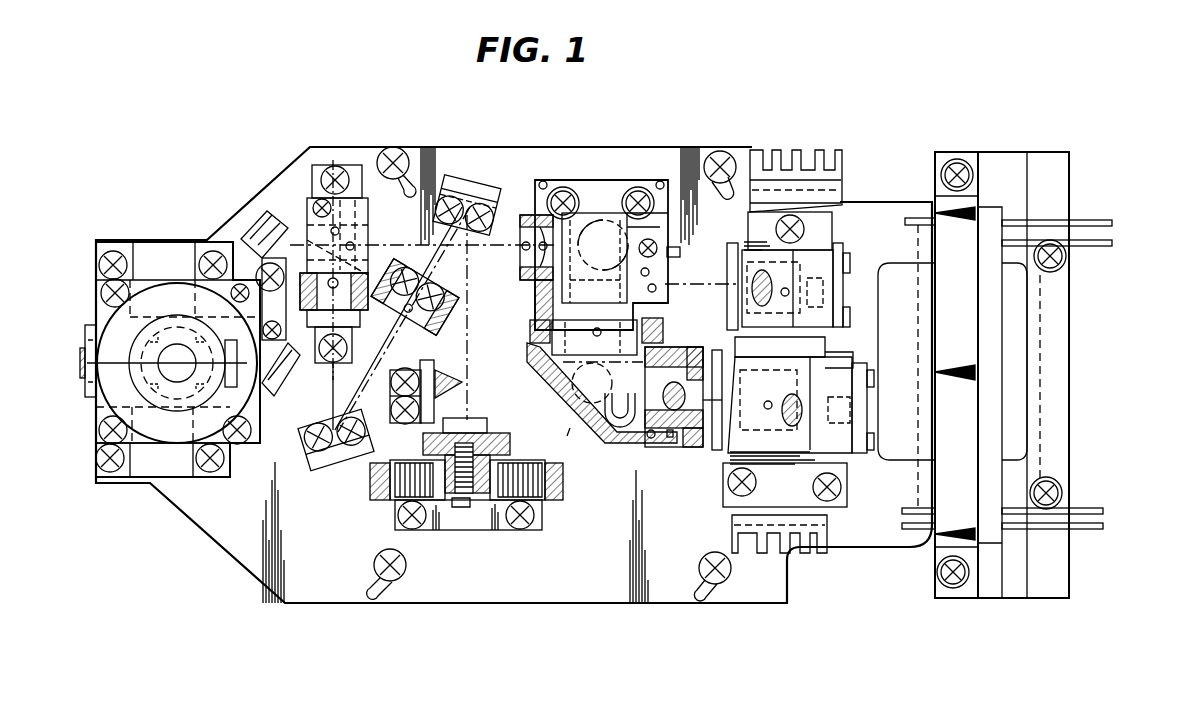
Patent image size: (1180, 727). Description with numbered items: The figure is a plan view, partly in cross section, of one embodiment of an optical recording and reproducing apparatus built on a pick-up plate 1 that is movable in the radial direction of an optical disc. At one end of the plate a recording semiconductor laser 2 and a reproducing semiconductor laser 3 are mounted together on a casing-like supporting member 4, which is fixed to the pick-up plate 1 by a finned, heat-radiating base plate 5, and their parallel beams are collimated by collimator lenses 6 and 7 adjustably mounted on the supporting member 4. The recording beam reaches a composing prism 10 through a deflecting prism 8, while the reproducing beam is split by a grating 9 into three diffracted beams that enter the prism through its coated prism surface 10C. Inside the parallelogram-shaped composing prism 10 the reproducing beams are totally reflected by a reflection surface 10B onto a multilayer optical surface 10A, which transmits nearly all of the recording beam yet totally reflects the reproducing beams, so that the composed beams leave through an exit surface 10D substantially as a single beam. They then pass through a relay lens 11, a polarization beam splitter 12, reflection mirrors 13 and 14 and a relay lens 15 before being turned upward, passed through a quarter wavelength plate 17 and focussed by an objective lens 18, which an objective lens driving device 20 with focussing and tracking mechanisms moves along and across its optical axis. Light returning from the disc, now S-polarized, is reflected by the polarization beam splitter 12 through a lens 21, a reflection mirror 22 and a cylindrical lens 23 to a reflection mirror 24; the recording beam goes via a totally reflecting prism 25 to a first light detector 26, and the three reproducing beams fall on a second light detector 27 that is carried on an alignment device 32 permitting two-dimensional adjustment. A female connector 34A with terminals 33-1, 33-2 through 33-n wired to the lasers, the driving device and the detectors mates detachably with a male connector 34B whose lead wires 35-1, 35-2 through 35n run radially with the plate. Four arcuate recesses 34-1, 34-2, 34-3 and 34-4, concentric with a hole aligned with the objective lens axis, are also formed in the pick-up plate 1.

The pick-up plate 1 is at (612, 597).
The recording semiconductor laser 2 is at (818, 297).
The reproducing semiconductor laser 3 is at (840, 410).
The supporting member 4 is at (835, 438).
The base plate 5 is at (818, 518).
The collimator lens 6 is at (788, 274).
The collimator lens 7 is at (750, 423).
The deflecting prism 8 is at (682, 150).
The grating 9 is at (638, 446).
The composing prism 10 is at (582, 297).
The optical surface 10A is at (595, 303).
The reflection surface 10B is at (587, 362).
The prism surface 10C is at (670, 345).
The exit surface 10D is at (565, 187).
The relay lens 11 is at (523, 213).
The polarization beam splitter 12 is at (307, 230).
The reflection mirror 13 is at (243, 255).
The reflection mirror 14 is at (268, 393).
The relay lens 15 is at (228, 441).
The quarter wavelength plate 17 is at (88, 356).
The objective lens 18 is at (152, 367).
The objective lens driving device 20 is at (96, 325).
The lens 21 is at (310, 333).
The reflection mirror 22 is at (330, 450).
The cylindrical lens 23 is at (425, 258).
The reflection mirror 24 is at (453, 187).
The totally reflecting prism 25 is at (442, 372).
The first light detector 26 is at (421, 422).
The second light detector 27 is at (488, 418).
The alignment device 32 is at (512, 452).
The terminal 33-1 is at (915, 526).
The terminal 33-2 is at (918, 507).
The terminal 33-n is at (917, 217).
The arcuate recess 34-1 is at (380, 584).
The arcuate recess 34-2 is at (710, 600).
The arcuate recess 34-3 is at (420, 165).
The arcuate recess 34-4 is at (731, 152).
The female connector 34A is at (972, 207).
The male connector 34B is at (992, 541).
The lead wire 35-1 is at (1047, 530).
The lead wire 35-2 is at (1060, 505).
The lead wire 35n is at (1043, 220).